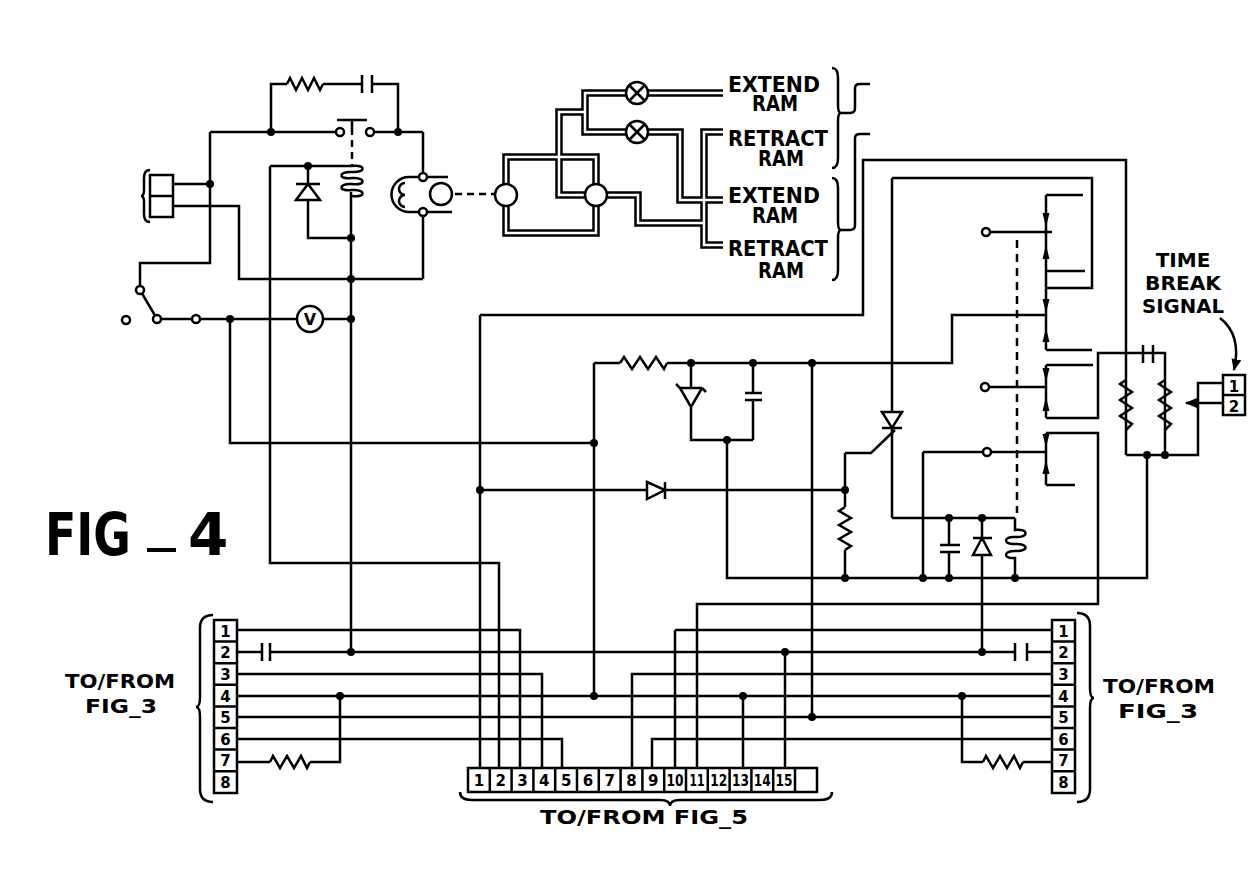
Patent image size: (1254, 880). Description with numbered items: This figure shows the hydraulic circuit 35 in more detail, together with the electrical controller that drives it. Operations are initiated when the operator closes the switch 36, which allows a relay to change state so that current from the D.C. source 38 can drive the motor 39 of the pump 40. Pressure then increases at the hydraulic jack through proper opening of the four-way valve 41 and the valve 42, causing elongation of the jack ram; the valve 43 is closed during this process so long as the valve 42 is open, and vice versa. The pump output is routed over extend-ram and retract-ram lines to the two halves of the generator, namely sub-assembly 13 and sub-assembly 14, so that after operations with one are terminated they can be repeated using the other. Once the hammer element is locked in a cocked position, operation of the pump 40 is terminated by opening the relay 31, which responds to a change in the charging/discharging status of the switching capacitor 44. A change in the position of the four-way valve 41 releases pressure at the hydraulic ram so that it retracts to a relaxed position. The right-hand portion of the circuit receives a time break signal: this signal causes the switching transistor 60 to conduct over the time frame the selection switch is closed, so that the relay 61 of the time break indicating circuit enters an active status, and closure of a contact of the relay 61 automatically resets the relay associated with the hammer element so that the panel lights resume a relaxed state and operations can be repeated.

The sub-assembly 13 is at (973, 118).
The sub-assembly 14 is at (973, 201).
The relay 31 is at (363, 200).
The hydraulic circuit 35 is at (430, 228).
The switch 36 is at (200, 333).
The source 38 is at (113, 195).
The motor 39 is at (452, 184).
The pump 40 is at (511, 207).
The four-way valve 41 is at (601, 208).
The valve 42 is at (626, 87).
The valve 43 is at (632, 144).
The switching capacitor 44 is at (274, 644).
The switching transistor 60 is at (897, 421).
The relay 61 is at (1022, 503).